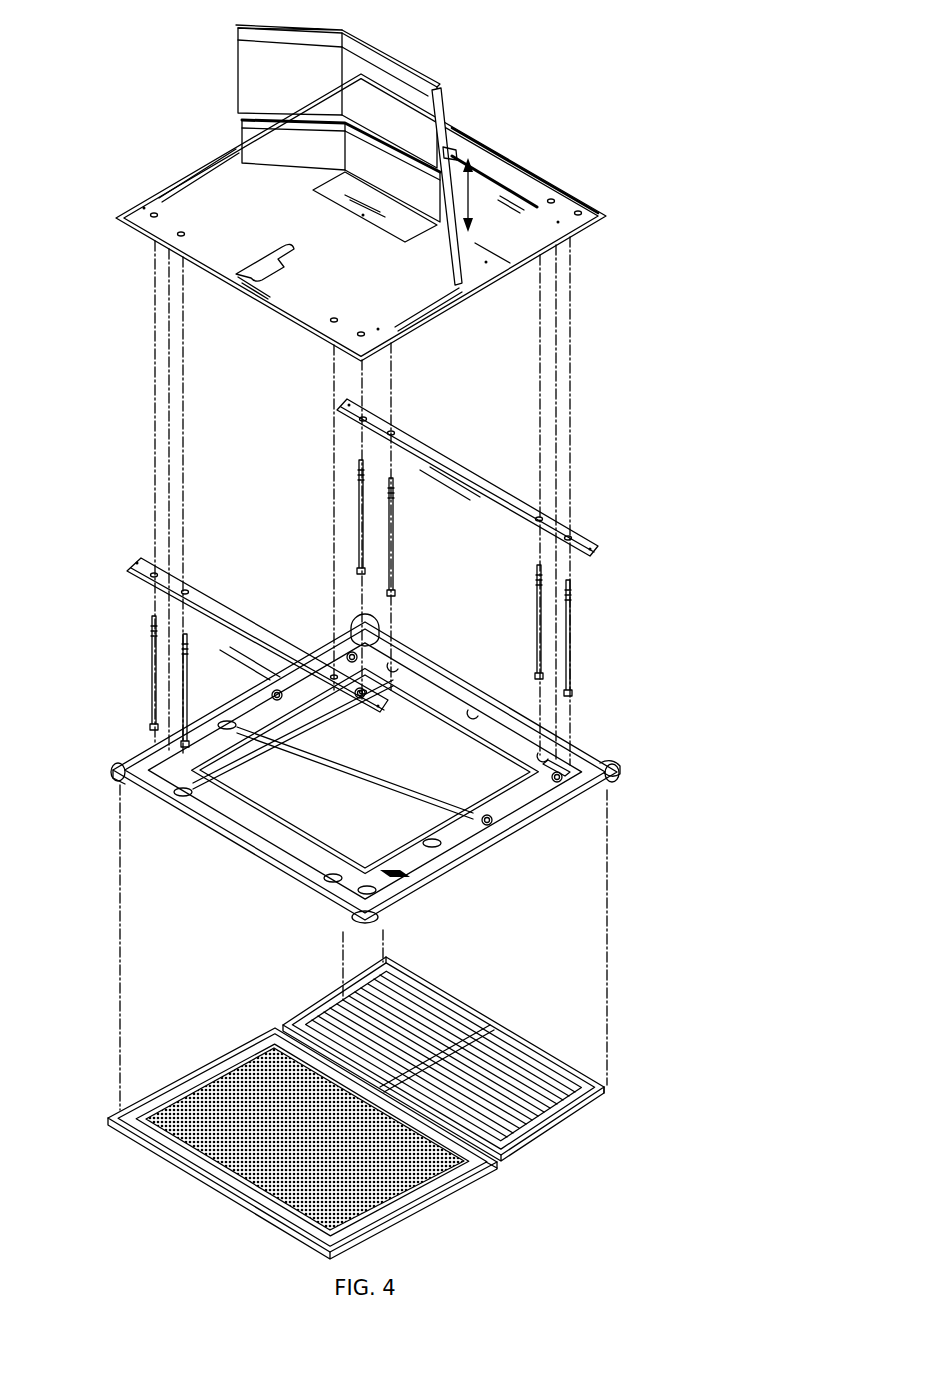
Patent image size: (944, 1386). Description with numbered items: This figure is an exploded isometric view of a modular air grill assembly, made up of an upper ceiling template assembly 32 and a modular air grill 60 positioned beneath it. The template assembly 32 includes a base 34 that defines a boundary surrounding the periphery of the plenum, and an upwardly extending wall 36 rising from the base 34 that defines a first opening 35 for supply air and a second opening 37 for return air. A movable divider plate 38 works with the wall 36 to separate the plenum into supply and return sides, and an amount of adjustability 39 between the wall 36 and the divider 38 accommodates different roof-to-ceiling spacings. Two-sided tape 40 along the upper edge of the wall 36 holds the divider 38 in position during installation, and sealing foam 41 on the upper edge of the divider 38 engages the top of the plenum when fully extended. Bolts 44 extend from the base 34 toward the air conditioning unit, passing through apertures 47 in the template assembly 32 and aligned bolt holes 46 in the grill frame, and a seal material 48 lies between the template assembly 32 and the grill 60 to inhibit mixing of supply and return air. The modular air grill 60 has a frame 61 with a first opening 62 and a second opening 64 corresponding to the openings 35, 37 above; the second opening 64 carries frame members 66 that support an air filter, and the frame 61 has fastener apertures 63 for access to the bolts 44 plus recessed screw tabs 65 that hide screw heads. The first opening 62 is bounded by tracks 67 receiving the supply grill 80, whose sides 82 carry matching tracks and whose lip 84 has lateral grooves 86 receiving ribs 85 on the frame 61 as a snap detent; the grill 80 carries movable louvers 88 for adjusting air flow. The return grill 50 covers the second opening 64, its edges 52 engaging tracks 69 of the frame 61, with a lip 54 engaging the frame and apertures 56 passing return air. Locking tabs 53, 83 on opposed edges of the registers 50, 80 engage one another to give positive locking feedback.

The ceiling template assembly 32 is at (645, 124).
The base 34 is at (537, 238).
The first opening 35 is at (507, 191).
The upwardly extending wall 36 is at (256, 142).
The second opening 37 is at (326, 268).
The divider plate 38 is at (253, 72).
The adjustability 39 is at (473, 195).
The two-sided tape 40 is at (285, 124).
The sealing foam 41 is at (407, 69).
The bolts 44 is at (393, 542).
The bolt holes 46 is at (393, 430).
The apertures 47 is at (184, 232).
The seal material 48 is at (280, 683).
The return grill 50 is at (144, 1084).
The edges 52 is at (154, 1091).
The locking tabs 53 is at (176, 1058).
The lip 54 is at (251, 1205).
The apertures 56 is at (483, 1194).
The modular air grill 60 is at (611, 709).
The frame 61 is at (565, 830).
The first opening 62 is at (455, 760).
The fastener apertures 63 is at (195, 770).
The second opening 64 is at (262, 848).
The screw tabs 65 is at (538, 773).
The frame members 66 is at (345, 775).
The tracks 67 is at (370, 675).
The tracks 69 is at (140, 793).
The supply grill 80 is at (580, 1122).
The sides 82 is at (304, 1001).
The locking tabs 83 is at (338, 1003).
The lip 84 is at (577, 1064).
The rib 85 is at (386, 648).
The lateral grooves 86 is at (612, 1102).
The louvers 88 is at (398, 1010).